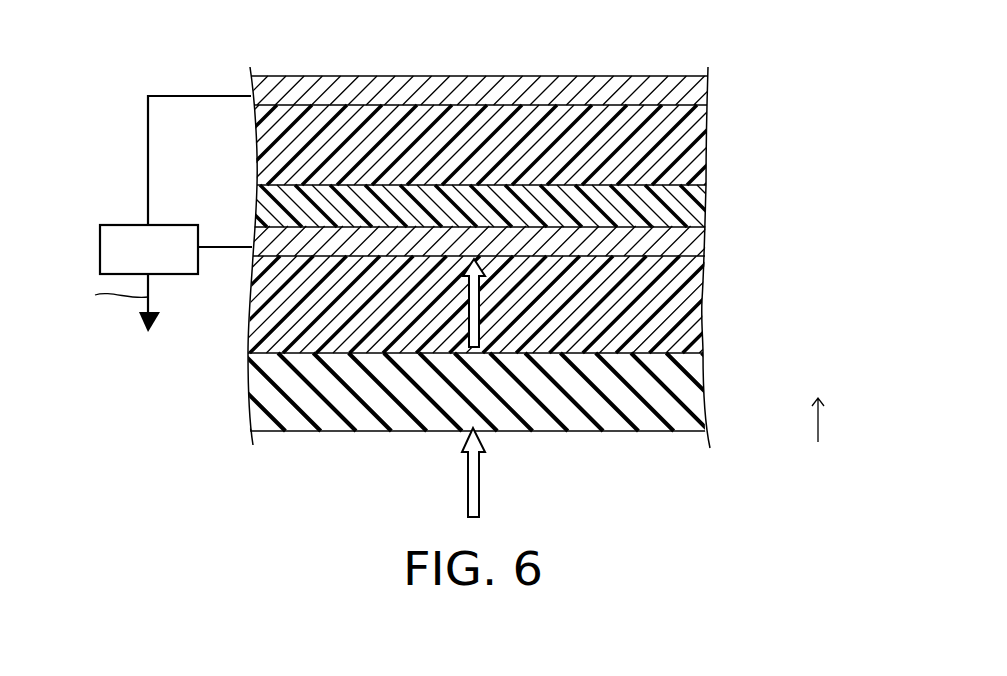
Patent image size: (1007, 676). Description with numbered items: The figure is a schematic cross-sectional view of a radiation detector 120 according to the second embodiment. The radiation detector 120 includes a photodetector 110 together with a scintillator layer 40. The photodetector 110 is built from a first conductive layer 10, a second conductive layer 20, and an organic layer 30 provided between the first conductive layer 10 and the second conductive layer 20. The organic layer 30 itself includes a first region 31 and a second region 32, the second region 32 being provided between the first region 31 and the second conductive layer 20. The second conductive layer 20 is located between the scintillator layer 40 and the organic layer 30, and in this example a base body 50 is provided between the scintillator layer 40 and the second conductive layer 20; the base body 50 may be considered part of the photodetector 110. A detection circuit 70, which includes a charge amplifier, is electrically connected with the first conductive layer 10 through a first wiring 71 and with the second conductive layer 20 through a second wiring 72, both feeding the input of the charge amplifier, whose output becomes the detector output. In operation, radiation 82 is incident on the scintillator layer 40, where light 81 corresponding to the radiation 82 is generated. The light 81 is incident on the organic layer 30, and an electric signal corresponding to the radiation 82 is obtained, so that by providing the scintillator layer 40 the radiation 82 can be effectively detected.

The first conductive layer 10 is at (687, 92).
The second conductive layer 20 is at (682, 243).
The organic layer 30 is at (778, 130).
The first region 31 is at (682, 148).
The second region 32 is at (682, 205).
The scintillator layer 40 is at (682, 393).
The base body 50 is at (682, 307).
The detection circuit 70 is at (127, 225).
The first wiring 71 is at (147, 125).
The second wiring 72 is at (222, 250).
The light 81 is at (480, 312).
The radiation 82 is at (480, 487).
The photodetector 110 is at (782, 113).
The radiation detector 120 is at (852, 88).